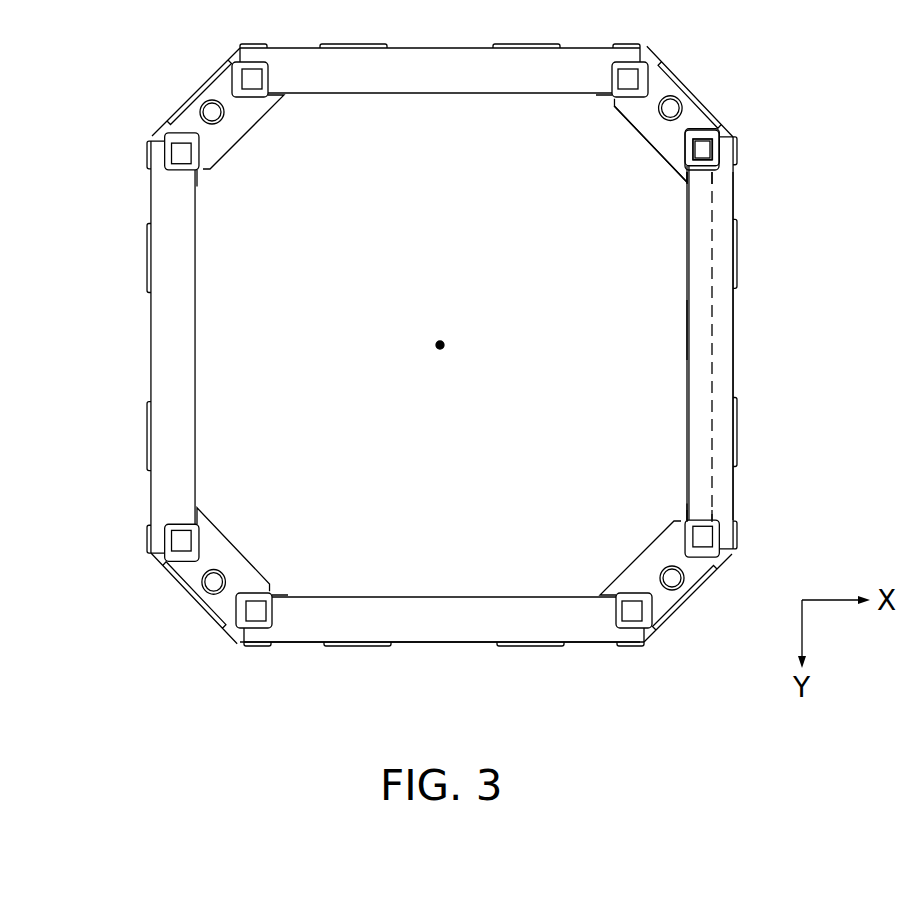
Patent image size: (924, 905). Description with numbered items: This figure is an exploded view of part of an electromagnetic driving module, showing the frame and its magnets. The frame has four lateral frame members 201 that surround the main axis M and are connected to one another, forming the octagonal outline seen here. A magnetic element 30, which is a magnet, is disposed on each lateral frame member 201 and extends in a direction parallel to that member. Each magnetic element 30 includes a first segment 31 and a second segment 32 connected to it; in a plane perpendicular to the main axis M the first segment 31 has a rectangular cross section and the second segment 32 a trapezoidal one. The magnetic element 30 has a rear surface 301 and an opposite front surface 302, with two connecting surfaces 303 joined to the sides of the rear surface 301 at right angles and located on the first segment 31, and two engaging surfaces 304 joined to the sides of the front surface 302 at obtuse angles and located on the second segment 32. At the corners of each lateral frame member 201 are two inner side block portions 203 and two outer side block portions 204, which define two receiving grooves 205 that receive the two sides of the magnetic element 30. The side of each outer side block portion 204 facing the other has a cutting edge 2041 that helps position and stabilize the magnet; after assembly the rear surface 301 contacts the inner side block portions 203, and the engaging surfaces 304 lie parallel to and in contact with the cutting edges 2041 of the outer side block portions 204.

The magnetic element 30 is at (738, 312).
The first segment 31 is at (700, 326).
The second segment 32 is at (720, 340).
The rear surface 301 is at (687, 378).
The front surface 302 is at (735, 378).
The connecting surface 303 is at (698, 180).
The engaging surface 304 is at (716, 175).
The lateral frame member 201 is at (579, 652).
The inner side block portion 203 is at (682, 165).
The outer side block portion 204 is at (723, 152).
The cutting edge 2041 is at (712, 165).
The receiving groove 205 is at (705, 182).
The main axis M is at (430, 346).